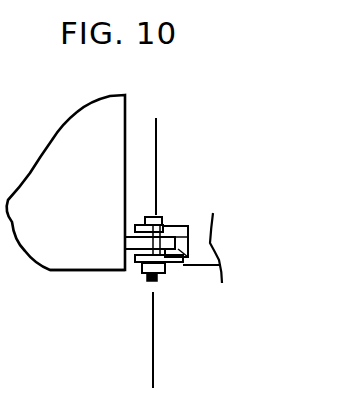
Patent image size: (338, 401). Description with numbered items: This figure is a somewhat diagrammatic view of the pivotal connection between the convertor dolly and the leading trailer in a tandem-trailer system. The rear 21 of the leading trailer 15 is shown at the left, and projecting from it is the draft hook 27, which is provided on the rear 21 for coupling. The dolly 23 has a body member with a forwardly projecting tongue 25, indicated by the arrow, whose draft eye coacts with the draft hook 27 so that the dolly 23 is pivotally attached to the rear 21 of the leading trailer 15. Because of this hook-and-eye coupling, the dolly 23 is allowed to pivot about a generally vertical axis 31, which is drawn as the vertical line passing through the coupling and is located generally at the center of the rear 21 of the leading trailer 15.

The leading trailer 15 is at (82, 261).
The rear of the leading trailer 21 is at (111, 121).
The dolly 23 is at (197, 240).
The tongue 25 is at (189, 195).
The draft hook 27 is at (185, 265).
The vertical axis 31 is at (157, 147).